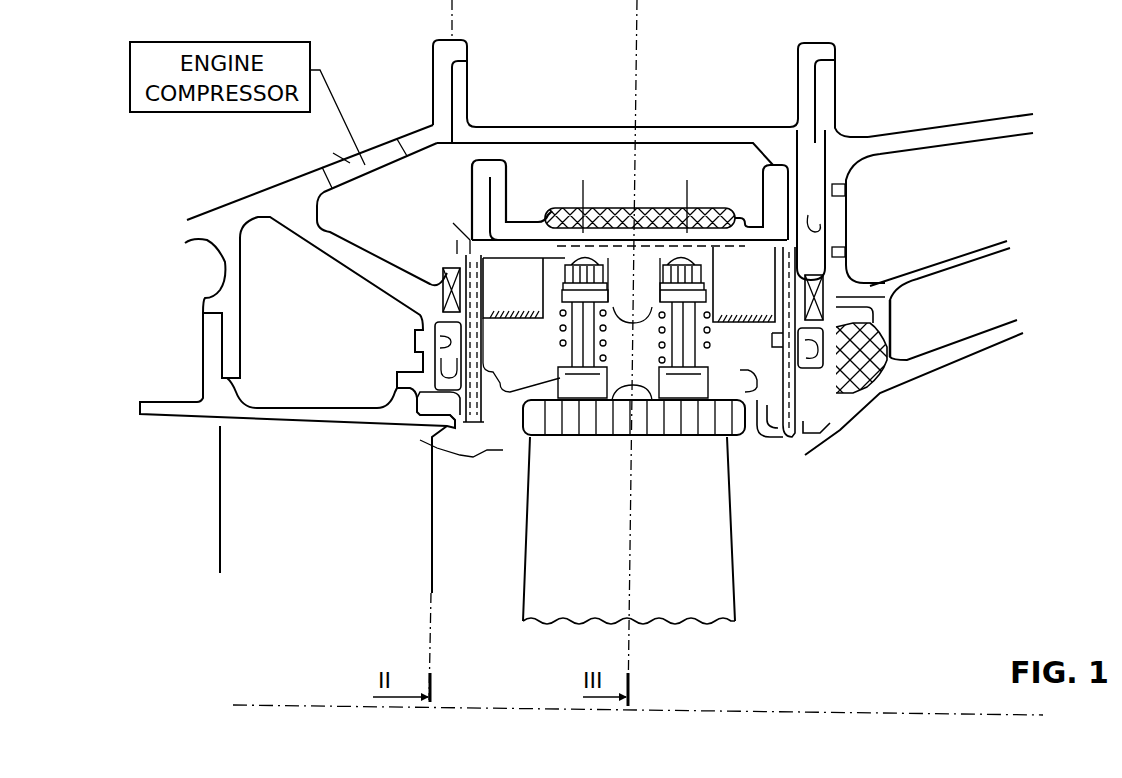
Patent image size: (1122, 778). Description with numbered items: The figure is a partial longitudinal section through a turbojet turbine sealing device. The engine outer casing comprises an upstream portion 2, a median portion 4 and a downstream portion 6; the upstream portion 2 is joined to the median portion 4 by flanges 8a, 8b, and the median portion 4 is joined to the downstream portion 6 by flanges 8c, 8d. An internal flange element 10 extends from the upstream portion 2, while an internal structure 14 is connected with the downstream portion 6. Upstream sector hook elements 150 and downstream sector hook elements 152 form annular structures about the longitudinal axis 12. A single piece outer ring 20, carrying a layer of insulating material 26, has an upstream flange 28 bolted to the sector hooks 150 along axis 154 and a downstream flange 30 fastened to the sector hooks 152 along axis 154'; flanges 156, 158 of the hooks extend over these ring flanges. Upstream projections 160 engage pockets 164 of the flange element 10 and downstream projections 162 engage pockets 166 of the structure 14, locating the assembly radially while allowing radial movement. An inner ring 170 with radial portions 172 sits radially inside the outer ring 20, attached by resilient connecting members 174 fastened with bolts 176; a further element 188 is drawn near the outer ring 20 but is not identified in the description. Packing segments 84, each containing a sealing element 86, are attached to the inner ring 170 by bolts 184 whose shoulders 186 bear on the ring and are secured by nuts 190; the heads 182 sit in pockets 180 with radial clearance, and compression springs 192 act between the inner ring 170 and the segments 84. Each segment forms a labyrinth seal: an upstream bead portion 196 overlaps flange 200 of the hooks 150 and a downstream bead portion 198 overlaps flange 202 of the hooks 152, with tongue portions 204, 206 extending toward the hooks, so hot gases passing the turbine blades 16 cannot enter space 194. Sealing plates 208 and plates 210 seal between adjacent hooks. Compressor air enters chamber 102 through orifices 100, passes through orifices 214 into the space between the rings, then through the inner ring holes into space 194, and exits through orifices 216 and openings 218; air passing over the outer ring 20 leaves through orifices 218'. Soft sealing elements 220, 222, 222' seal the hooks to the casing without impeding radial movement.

The upstream portion 2 is at (248, 202).
The median portion 4 is at (625, 138).
The downstream portion 6 is at (1007, 132).
The flange 8a is at (441, 82).
The flange 8b is at (522, 53).
The flange 8c is at (815, 49).
The flange 8d is at (822, 85).
The internal flange element 10 is at (337, 250).
The longitudinal axis 12 is at (292, 705).
The internal structure 14 is at (1040, 218).
The turbine blades 16 is at (735, 603).
The outer ring 20 is at (670, 238).
The layer of insulating material 26 is at (620, 207).
The upstream flange 28 is at (495, 183).
The downstream flange 30 is at (775, 192).
The packing segments 84 is at (770, 420).
The sealing element 86 is at (703, 440).
The orifices 100 is at (330, 146).
The chamber 102 is at (370, 227).
The upstream sector hook elements 150 is at (472, 180).
The downstream sector hook elements 152 is at (838, 189).
The axis 154 is at (443, 190).
The axis 154' is at (865, 201).
The flange 156 is at (497, 167).
The flange 158 is at (779, 178).
The upstream projections 160 is at (430, 265).
The downstream projections 162 is at (917, 252).
The pockets 164 is at (443, 287).
The pockets 166 is at (970, 298).
The inner ring 170 is at (742, 318).
The radial portions 172 is at (655, 430).
The resilient connecting members 174 is at (562, 246).
The bolts 176 is at (582, 262).
The pockets 180 is at (676, 395).
The heads 182 is at (583, 425).
The bolts 184 is at (578, 360).
The shoulder 186 is at (659, 329).
The pin 188 is at (683, 255).
The nuts 190 is at (565, 282).
The compression springs 192 is at (823, 343).
The space 194 is at (885, 369).
The annular bead portion 196 is at (490, 425).
The annular bead portion 198 is at (778, 442).
The flange 200 is at (473, 437).
The flange 202 is at (855, 478).
The annular tongue portion 204 is at (453, 397).
The annular tongue portion 206 is at (830, 420).
The sealing plates 208 is at (393, 388).
The plates 210 is at (907, 444).
The orifices 214 is at (477, 248).
The orifices 216 is at (875, 335).
The openings 218 is at (909, 232).
The orifices 218' is at (874, 180).
The sealing element 220 is at (413, 350).
The sealing element 222 is at (871, 133).
The sealing element 222' is at (937, 407).